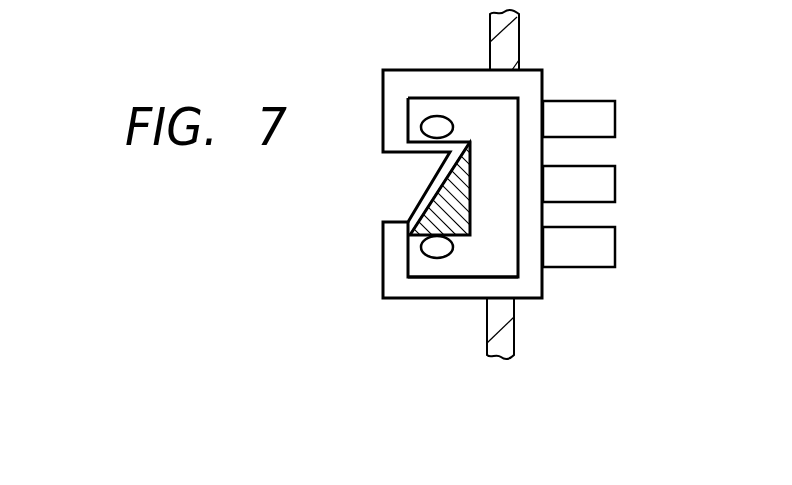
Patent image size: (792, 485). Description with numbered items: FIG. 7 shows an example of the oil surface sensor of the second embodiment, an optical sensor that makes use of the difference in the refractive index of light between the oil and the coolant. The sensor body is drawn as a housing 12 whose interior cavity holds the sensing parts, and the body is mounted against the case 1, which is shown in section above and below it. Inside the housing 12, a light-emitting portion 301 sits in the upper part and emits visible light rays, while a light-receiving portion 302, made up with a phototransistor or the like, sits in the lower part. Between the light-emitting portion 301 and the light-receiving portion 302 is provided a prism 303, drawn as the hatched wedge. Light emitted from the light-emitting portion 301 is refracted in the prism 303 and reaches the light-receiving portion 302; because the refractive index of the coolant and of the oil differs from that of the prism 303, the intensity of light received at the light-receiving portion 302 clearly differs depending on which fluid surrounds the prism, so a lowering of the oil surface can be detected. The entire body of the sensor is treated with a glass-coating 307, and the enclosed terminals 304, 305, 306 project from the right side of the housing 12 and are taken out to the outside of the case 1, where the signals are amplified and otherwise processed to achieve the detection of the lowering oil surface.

The case 1 is at (519, 45).
The housing / holding member 12 is at (433, 70).
The light-emitting portion 301 is at (436, 127).
The light-receiving portion 302 is at (437, 247).
The prism 303 is at (440, 205).
The enclosed terminal 304 is at (617, 114).
The enclosed terminal 305 is at (617, 177).
The enclosed terminal 306 is at (617, 237).
The glass-coating 307 is at (438, 288).